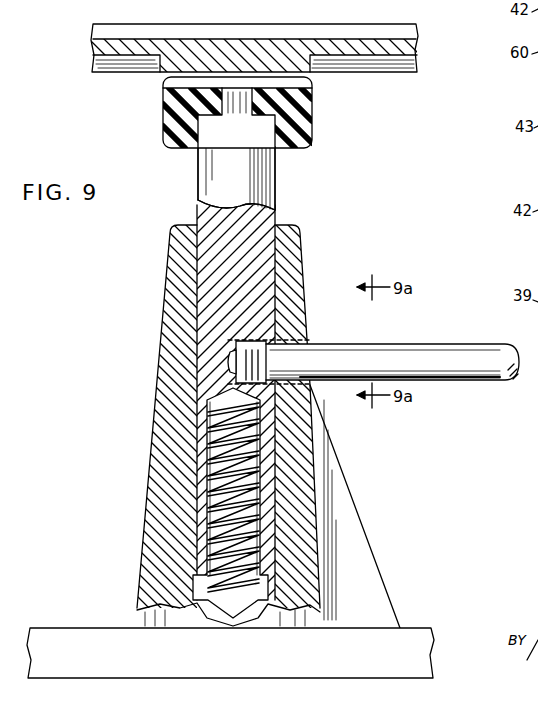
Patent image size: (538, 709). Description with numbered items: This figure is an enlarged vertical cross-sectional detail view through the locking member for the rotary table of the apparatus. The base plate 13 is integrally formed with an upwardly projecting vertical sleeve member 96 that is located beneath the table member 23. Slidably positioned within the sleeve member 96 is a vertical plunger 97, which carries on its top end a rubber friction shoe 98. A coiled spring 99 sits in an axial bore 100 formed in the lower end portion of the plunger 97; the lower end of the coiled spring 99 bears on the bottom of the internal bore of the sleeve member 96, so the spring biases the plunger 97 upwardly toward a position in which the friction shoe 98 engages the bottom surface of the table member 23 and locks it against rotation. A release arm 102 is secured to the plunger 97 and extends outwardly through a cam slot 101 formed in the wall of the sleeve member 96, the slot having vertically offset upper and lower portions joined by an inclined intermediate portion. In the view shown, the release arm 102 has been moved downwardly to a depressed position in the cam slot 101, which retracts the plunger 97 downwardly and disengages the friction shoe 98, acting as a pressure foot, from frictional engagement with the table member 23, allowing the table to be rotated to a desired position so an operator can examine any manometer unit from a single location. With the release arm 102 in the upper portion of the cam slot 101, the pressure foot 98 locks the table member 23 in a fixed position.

The base plate 13 is at (411, 646).
The table member 23 is at (405, 52).
The sleeve member 96 is at (302, 290).
The plunger 97 is at (262, 201).
The rubber friction shoe 98 is at (306, 113).
The coiled spring 99 is at (208, 472).
The axial bore 100 is at (258, 464).
The cam slot 101 is at (283, 330).
The release arm 102 is at (400, 358).